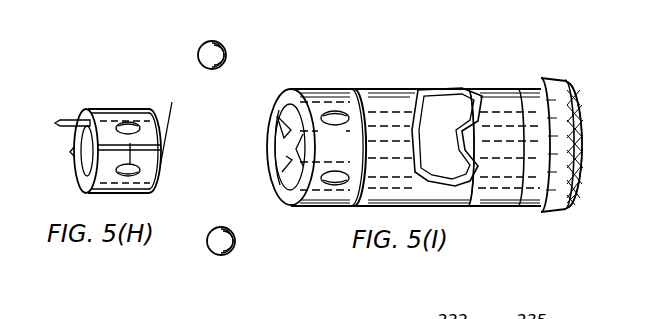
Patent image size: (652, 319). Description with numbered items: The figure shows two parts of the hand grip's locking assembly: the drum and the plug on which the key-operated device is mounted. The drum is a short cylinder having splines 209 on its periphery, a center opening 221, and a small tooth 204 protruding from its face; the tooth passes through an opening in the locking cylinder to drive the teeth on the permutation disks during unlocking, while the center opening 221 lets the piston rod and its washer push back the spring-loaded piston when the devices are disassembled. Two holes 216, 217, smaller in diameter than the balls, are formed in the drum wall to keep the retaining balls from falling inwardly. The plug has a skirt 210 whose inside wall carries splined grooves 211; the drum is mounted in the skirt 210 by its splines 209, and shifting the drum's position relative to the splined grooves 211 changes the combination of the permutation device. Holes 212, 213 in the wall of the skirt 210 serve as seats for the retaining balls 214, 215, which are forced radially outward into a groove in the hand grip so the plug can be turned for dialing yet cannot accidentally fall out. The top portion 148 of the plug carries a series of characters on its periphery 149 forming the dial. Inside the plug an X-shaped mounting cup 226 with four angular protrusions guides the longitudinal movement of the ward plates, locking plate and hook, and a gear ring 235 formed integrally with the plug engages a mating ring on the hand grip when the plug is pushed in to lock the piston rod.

In FIG. 5I, the top portion of the plug 148 is at (561, 79).
In FIG. 5I, the periphery with characters 149 is at (562, 130).
In FIG. 5H, the small tooth 204 is at (72, 119).
In FIG. 5H, the splines 209 is at (149, 110).
In FIG. 5I, the skirt 210 is at (305, 93).
In FIG. 5I, the splined grooves 211 is at (305, 147).
In FIG. 5I, the hole 212 is at (339, 114).
In FIG. 5I, the hole 213 is at (338, 178).
In FIG. 5H, the retaining ball 214 is at (222, 43).
In FIG. 5H, the retaining ball 215 is at (218, 227).
In FIG. 5H, the hole 216 is at (127, 126).
In FIG. 5H, the hole 217 is at (125, 172).
In FIG. 5H, the center opening 221 is at (72, 152).
In FIG. 5I, the X-shaped mounting cup 226 is at (436, 150).
In FIG. 5I, the gear ring 235 is at (522, 166).